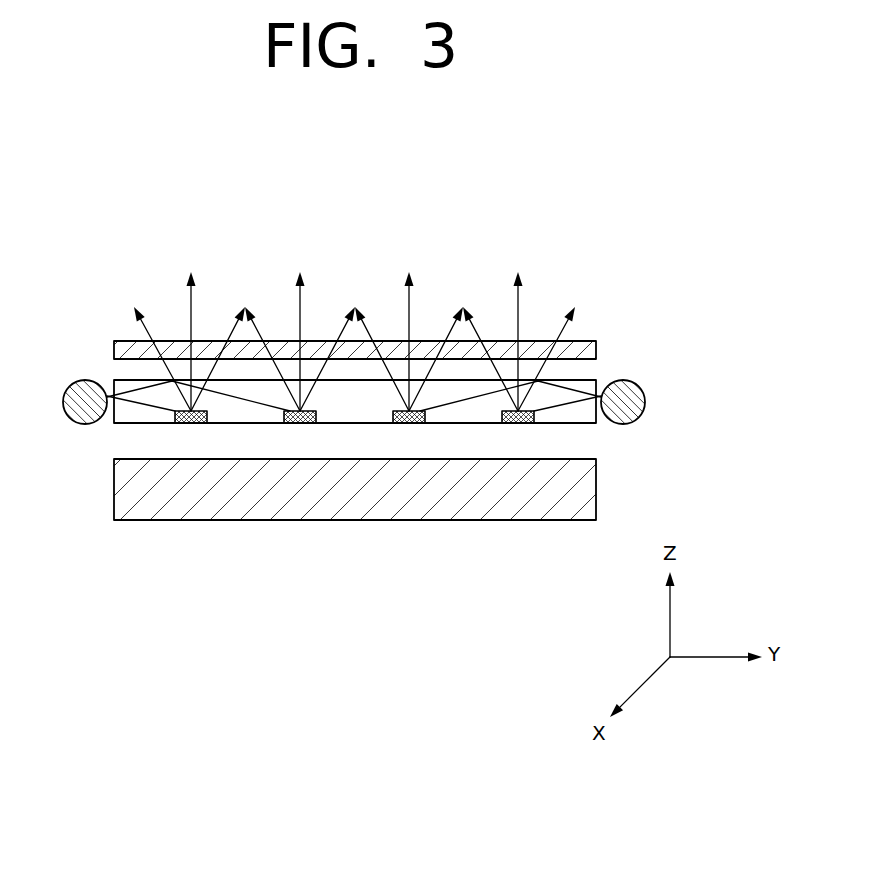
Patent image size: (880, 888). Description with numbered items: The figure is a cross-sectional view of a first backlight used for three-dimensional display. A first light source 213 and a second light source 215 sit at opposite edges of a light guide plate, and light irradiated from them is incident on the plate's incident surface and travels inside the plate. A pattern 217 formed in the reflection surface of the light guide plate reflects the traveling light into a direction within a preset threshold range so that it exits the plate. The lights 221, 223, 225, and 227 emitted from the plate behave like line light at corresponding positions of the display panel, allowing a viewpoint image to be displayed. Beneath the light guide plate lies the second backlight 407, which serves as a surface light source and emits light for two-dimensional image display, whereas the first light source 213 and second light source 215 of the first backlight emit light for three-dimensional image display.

The first light source 213 is at (82, 383).
The second light source 215 is at (638, 383).
The pattern 217 is at (515, 424).
The light 221 is at (190, 298).
The light 223 is at (299, 298).
The light 225 is at (408, 298).
The light 227 is at (517, 298).
The second backlight 407 is at (597, 480).